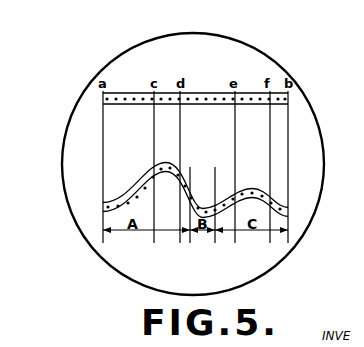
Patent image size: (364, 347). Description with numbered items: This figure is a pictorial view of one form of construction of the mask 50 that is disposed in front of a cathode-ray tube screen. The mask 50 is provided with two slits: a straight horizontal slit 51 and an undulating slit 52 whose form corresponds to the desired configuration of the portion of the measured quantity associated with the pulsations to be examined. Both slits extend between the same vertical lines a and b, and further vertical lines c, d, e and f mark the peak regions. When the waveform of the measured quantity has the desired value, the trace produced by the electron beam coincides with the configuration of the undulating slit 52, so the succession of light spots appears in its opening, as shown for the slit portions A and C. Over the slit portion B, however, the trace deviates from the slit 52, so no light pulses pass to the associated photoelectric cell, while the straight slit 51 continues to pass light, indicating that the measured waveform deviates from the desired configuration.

The mask 50 is at (301, 119).
The straight horizontal slit 51 is at (245, 92).
The undulating slit 52 is at (240, 189).